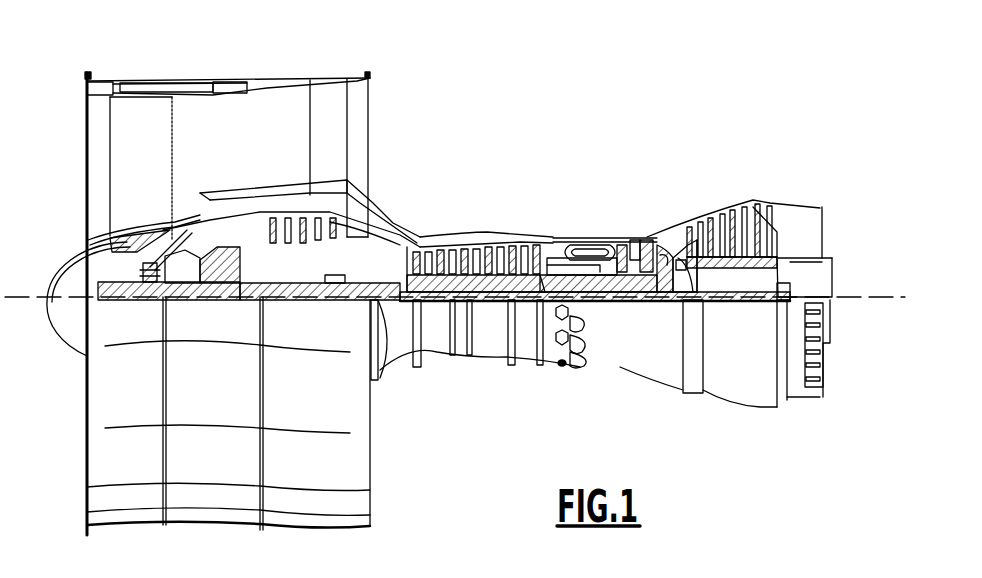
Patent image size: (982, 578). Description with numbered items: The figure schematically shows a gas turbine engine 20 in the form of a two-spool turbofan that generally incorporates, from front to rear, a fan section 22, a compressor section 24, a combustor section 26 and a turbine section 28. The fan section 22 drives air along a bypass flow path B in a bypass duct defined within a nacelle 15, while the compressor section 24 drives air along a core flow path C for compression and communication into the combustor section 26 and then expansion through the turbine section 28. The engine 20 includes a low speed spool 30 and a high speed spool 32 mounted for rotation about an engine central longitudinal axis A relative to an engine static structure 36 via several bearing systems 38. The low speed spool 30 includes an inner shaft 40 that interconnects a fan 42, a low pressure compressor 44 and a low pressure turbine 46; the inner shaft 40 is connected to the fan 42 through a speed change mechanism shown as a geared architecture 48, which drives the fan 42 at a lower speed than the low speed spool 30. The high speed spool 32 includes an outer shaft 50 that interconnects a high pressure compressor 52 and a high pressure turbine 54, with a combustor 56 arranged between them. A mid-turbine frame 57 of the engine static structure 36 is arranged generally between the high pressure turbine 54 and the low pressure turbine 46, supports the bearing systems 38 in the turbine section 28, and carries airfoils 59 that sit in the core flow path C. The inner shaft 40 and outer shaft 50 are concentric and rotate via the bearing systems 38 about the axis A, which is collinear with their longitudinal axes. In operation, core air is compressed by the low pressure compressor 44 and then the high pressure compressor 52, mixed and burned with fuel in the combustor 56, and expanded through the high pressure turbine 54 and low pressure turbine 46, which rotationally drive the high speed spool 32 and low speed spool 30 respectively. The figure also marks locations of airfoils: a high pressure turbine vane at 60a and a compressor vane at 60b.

The nacelle 15 is at (227, 92).
The gas turbine engine 20 is at (583, 120).
The fan section 22 is at (173, 75).
The compressor section 24 is at (407, 227).
The combustor section 26 is at (583, 222).
The turbine section 28 is at (698, 190).
The low speed spool 30 is at (492, 305).
The high speed spool 32 is at (528, 237).
The engine static structure 36 is at (525, 370).
The bearing systems 38 is at (331, 290).
The inner shaft 40 is at (387, 303).
The fan 42 is at (158, 181).
The low pressure compressor 44 is at (330, 215).
The low pressure turbine 46 is at (736, 208).
The geared architecture 48 is at (233, 287).
The outer shaft 50 is at (588, 298).
The high pressure compressor 52 is at (470, 240).
The high pressure turbine 54 is at (636, 235).
The combustor 56 is at (583, 250).
The mid-turbine frame 57 is at (670, 228).
The airfoils 59 is at (689, 267).
The high pressure turbine vane 60a is at (691, 227).
The compressor vane 60b is at (512, 240).
The engine central longitudinal axis A is at (897, 297).
The bypass flow path B is at (205, 141).
The core flow path C is at (232, 222).